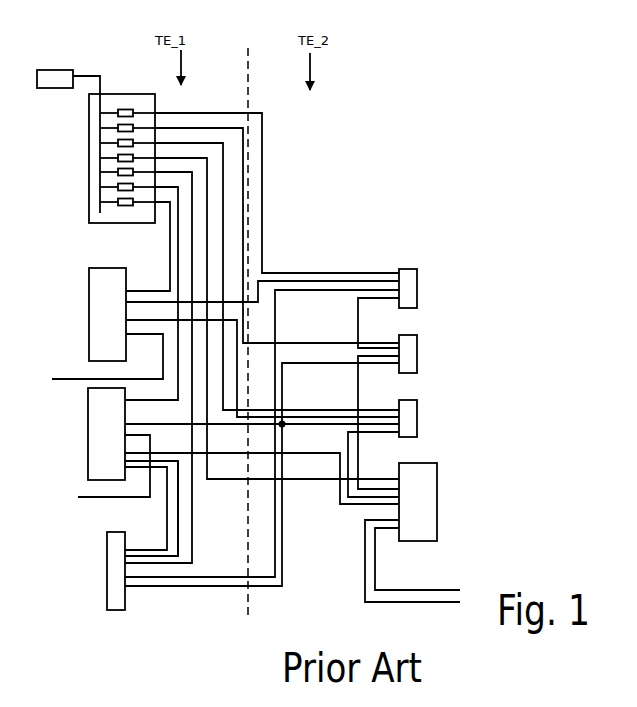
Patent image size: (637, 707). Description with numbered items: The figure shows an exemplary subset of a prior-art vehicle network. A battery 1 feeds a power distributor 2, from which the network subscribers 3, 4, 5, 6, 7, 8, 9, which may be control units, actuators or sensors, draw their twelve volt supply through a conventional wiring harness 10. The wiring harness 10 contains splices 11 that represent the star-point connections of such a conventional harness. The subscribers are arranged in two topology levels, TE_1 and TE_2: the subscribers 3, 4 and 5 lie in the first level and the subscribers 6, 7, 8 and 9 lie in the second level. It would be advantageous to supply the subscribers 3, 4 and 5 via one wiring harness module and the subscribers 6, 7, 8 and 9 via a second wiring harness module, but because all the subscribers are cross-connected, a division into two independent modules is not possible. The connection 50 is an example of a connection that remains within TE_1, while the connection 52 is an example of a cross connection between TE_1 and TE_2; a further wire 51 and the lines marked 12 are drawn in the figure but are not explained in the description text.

The battery 1 is at (68, 141).
The power distributor 2 is at (237, 328).
The network subscriber 3 is at (244, 342).
The network subscriber 4 is at (243, 472).
The network subscriber 5 is at (116, 571).
The network subscriber 6 is at (387, 308).
The network subscriber 7 is at (387, 412).
The network subscriber 8 is at (382, 448).
The network subscriber 9 is at (418, 502).
The wiring harness 10 is at (293, 242).
The splice 11 is at (262, 433).
The ground connection 12 is at (249, 468).
The connection within TE_1 50 is at (178, 530).
The wire 51 is at (277, 317).
The connection between TE_1 and TE_2 52 is at (305, 367).